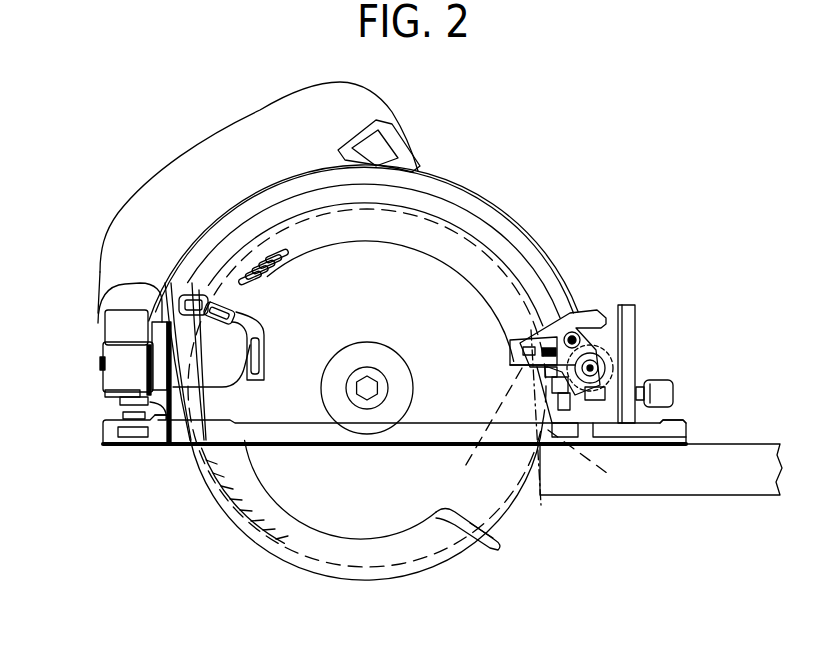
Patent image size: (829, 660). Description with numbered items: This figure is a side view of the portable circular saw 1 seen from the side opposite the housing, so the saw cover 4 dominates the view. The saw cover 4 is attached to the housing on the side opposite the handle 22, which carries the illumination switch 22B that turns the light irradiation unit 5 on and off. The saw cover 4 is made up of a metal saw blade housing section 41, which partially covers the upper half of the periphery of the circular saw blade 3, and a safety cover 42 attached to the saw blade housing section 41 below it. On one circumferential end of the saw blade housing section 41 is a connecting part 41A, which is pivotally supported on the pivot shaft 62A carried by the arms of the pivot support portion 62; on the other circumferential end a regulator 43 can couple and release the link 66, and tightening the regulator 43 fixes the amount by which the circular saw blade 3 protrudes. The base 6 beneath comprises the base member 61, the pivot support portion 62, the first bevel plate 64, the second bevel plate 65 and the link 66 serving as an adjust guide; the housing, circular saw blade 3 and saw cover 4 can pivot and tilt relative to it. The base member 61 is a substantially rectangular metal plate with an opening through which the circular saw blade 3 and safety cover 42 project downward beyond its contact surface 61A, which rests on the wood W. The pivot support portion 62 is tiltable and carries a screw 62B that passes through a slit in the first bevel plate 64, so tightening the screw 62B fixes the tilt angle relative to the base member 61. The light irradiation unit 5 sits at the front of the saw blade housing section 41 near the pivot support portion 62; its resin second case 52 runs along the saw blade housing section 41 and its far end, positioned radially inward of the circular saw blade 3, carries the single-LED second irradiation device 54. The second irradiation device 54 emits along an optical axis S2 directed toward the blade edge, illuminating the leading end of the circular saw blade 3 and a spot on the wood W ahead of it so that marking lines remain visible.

The circular saw 1 is at (636, 221).
The circular saw blade 3 is at (474, 540).
The saw cover 4 is at (515, 223).
The light irradiation unit 5 is at (583, 330).
The base 6 is at (674, 418).
The handle 22 is at (233, 140).
The illumination switch 22B is at (380, 156).
The saw blade housing section 41 is at (457, 200).
The connecting part 41A is at (608, 345).
The safety cover 42 is at (363, 583).
The regulator 43 is at (110, 373).
The second case 52 is at (562, 313).
The second irradiation device 54 is at (548, 425).
The base member 61 is at (674, 437).
The contact surface 61A is at (163, 446).
The pivot support portion 62 is at (617, 422).
The pivot shaft 62A is at (605, 365).
The screw 62B is at (652, 393).
The first bevel plate 64 is at (628, 373).
The second bevel plate 65 is at (152, 408).
The link 66 is at (140, 409).
The wood W is at (673, 488).
The optical axis S2 is at (545, 432).